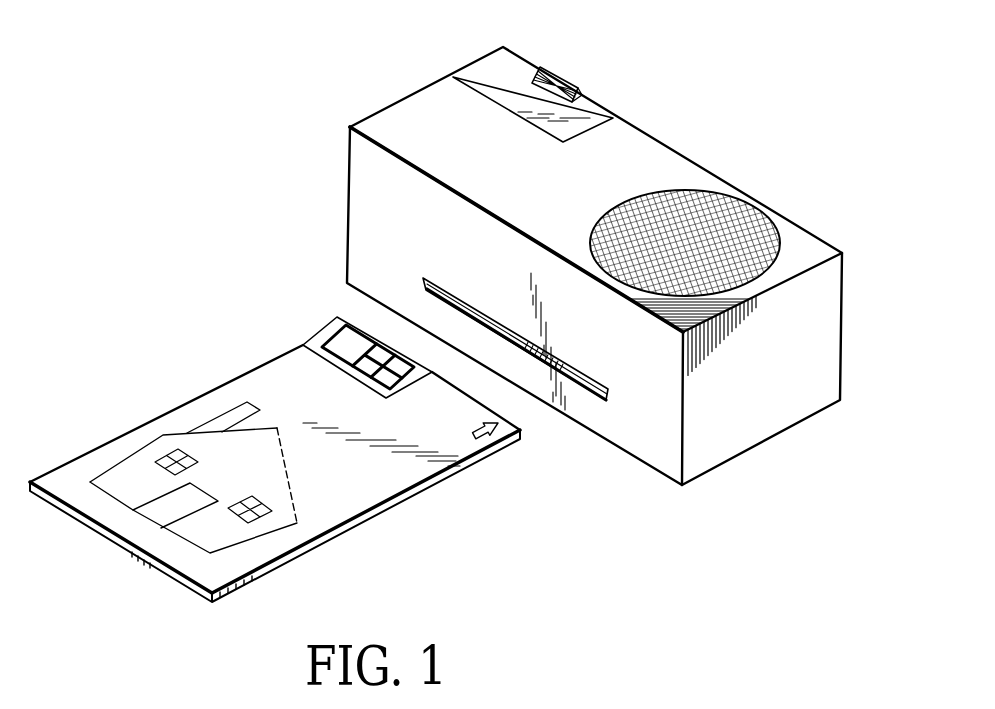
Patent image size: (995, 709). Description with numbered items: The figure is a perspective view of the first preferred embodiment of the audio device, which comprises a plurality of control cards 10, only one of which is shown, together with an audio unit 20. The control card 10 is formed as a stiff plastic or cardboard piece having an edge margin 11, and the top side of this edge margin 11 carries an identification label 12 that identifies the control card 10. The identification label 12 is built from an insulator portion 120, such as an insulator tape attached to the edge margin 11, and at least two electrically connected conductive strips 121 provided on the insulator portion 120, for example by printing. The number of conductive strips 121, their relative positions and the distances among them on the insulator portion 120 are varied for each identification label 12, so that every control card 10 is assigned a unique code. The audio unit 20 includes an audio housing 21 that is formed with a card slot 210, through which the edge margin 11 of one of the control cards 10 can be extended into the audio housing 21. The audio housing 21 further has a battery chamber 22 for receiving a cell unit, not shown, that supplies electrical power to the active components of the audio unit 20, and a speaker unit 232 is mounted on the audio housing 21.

The control card 10 is at (284, 427).
The edge margin 11 is at (457, 458).
The identification label 12 is at (332, 325).
The insulator portion 120 is at (303, 340).
The conductive strips 121 is at (337, 334).
The audio unit 20 is at (594, 280).
The audio housing 21 is at (800, 250).
The battery chamber 22 is at (597, 108).
The card slot 210 is at (597, 397).
The speaker unit 232 is at (712, 207).